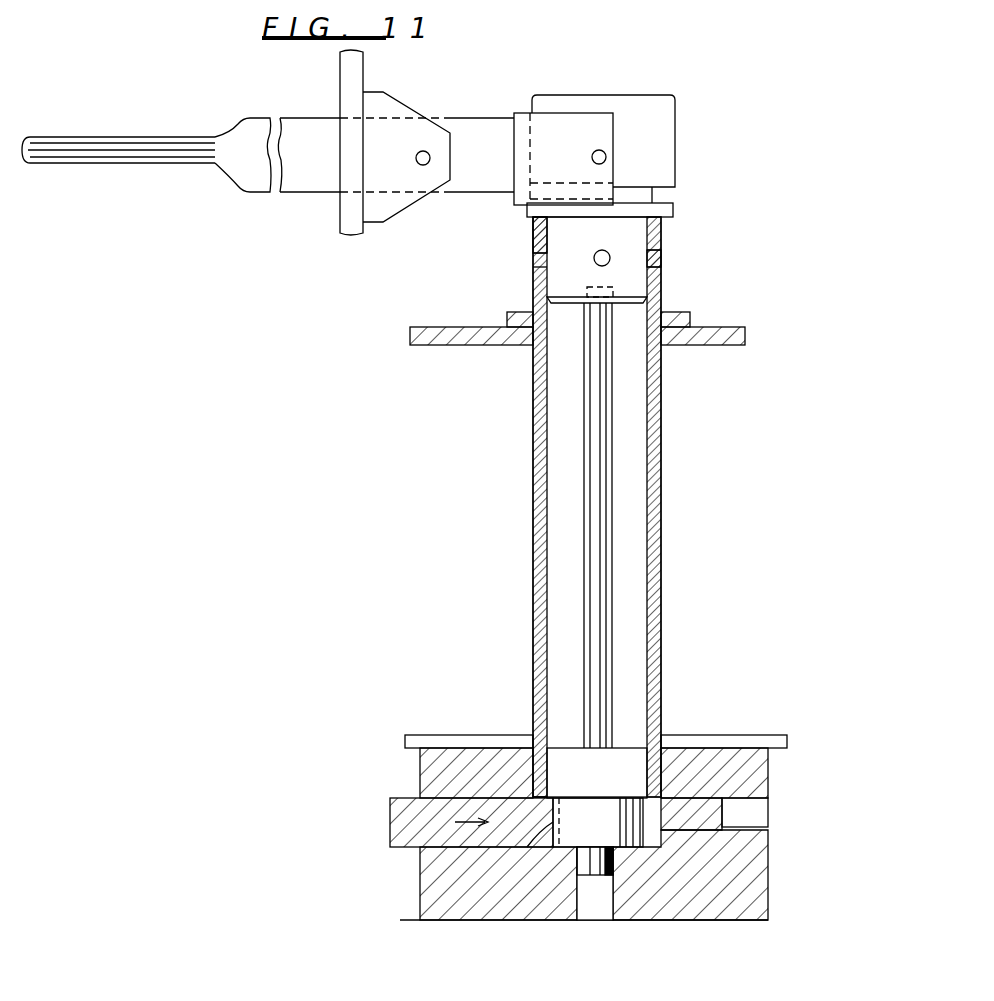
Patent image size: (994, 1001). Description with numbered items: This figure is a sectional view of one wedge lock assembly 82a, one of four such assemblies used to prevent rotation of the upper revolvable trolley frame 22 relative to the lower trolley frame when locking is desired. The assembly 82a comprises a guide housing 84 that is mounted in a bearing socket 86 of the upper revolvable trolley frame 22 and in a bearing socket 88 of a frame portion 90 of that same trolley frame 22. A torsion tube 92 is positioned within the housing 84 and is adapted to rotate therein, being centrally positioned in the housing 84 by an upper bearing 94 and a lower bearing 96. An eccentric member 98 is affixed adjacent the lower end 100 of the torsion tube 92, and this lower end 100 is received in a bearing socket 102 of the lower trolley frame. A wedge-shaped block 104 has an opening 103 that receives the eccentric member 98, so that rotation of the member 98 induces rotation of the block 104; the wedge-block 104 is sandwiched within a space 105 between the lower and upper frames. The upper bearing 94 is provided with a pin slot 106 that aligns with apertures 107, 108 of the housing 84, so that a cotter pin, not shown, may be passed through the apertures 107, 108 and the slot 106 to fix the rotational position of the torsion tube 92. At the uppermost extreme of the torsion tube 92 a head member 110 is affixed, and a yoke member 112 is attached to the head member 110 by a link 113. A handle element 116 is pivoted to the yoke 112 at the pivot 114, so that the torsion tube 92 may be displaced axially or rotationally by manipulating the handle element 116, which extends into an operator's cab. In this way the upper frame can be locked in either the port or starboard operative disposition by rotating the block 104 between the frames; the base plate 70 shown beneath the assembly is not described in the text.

The handle element 116 is at (175, 155).
The yoke member 112 is at (485, 132).
The pivot of handle element to yoke 114 is at (426, 151).
The head member 110 is at (650, 108).
The link 113 is at (606, 155).
The pin slot 106 is at (614, 240).
The upper bearing 94 is at (640, 239).
The aperture of housing 107 is at (657, 259).
The aperture of housing 108 is at (545, 261).
The wedge lock assembly 82a is at (520, 521).
The guide housing 84 is at (533, 555).
The torsion tube 92 is at (596, 466).
The frame portion 90 is at (477, 334).
The bearing socket 88 is at (535, 318).
The upper revolvable trolley frame 22 is at (440, 768).
The bearing socket 86 is at (540, 740).
The lower bearing 96 is at (632, 745).
The eccentric member 98 is at (597, 806).
The wedge-shaped block 104 is at (406, 846).
The space 105 is at (738, 815).
The base plate 70 is at (438, 892).
The opening 103 is at (527, 847).
The lower end of torsion tube 100 is at (592, 872).
The bearing socket 102 is at (613, 900).